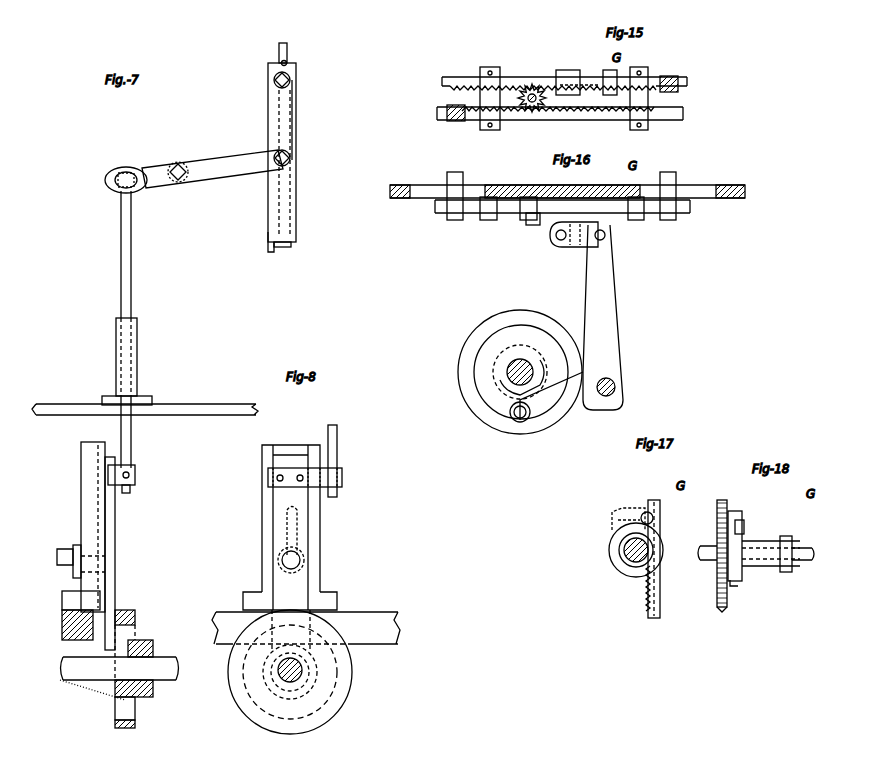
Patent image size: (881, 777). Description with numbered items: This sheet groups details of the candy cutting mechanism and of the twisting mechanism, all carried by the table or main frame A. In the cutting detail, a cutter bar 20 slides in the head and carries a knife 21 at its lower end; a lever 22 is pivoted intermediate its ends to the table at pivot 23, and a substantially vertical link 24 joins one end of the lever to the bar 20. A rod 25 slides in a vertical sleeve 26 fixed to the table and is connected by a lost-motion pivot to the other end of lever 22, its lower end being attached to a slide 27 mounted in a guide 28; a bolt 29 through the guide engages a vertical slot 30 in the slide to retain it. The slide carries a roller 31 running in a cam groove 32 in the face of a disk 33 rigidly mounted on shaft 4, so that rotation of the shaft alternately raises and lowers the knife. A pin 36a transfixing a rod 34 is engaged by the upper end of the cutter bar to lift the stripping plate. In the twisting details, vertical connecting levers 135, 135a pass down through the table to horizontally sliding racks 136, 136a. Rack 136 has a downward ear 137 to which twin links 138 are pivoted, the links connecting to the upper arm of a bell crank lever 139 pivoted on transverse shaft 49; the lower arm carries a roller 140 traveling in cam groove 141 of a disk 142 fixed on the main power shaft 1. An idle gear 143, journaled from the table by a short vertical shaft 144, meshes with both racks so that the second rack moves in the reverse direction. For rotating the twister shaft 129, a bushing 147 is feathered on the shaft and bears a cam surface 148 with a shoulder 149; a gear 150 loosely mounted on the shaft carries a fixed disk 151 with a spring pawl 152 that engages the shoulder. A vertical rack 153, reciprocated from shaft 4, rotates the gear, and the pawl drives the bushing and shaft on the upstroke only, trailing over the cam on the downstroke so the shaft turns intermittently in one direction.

In FIG. 16, the main power shaft 1 is at (528, 360).
In FIG. 7, the shaft 4 is at (180, 665).
In FIG. 8, the shaft 4 is at (298, 680).
In FIG. 7, the cutter bar 20 is at (296, 212).
In FIG. 7, the knife 21 is at (272, 253).
In FIG. 7, the lever 22 is at (212, 169).
In FIG. 7, the pivot 23 is at (186, 163).
In FIG. 7, the link 24 is at (292, 120).
In FIG. 7, the rod 25 is at (132, 269).
In FIG. 8, the rod 25 is at (338, 450).
In FIG. 7, the vertical sleeve 26 is at (140, 356).
In FIG. 7, the slide 27 is at (114, 521).
In FIG. 8, the slide 27 is at (305, 527).
In FIG. 7, the guide 28 is at (93, 527).
In FIG. 8, the guide 28 is at (322, 514).
In FIG. 7, the bolt 29 is at (58, 563).
In FIG. 8, the bolt 29 is at (293, 560).
In FIG. 8, the vertical slot 30 is at (298, 531).
In FIG. 7, the roller 31 is at (137, 626).
In FIG. 8, the roller 31 is at (296, 640).
In FIG. 7, the cam groove 32 is at (140, 646).
In FIG. 8, the cam groove 32 is at (332, 688).
In FIG. 7, the disk 33 is at (292, 246).
In FIG. 7, the rod 34 is at (288, 47).
In FIG. 7, the pin 36a is at (288, 62).
In FIG. 16, the shaft 49 is at (616, 382).
In FIG. 18, the twister shaft 129 is at (812, 557).
In FIG. 16, the vertical connecting lever 135 is at (674, 172).
In FIG. 16, the vertical connecting lever 135a is at (455, 172).
In FIG. 15, the rack 136 is at (688, 81).
In FIG. 15, the rack 136a is at (686, 113).
In FIG. 16, the ear 137 is at (536, 226).
In FIG. 15, the twin links 138 is at (572, 76).
In FIG. 16, the twin links 138 is at (575, 248).
In FIG. 16, the bell crank lever 139 is at (624, 296).
In FIG. 16, the roller 140 is at (527, 420).
In FIG. 16, the cam groove 141 is at (531, 382).
In FIG. 16, the disk 142 is at (555, 332).
In FIG. 15, the idle gear 143 is at (536, 88).
In FIG. 15, the short vertical shaft 144 is at (530, 92).
In FIG. 18, the bushing 147 is at (773, 541).
In FIG. 17, the cam surface 148 is at (622, 566).
In FIG. 18, the cam surface 148 is at (741, 540).
In FIG. 17, the shoulder 149 is at (625, 509).
In FIG. 18, the gear 150 is at (717, 546).
In FIG. 17, the disk 151 is at (660, 536).
In FIG. 18, the disk 151 is at (752, 583).
In FIG. 17, the spring pawl 152 is at (648, 511).
In FIG. 18, the spring pawl 152 is at (742, 512).
In FIG. 17, the vertical rack 153 is at (661, 598).
In FIG. 18, the vertical rack 153 is at (728, 600).
In FIG. 7, the table or main frame A is at (196, 412).